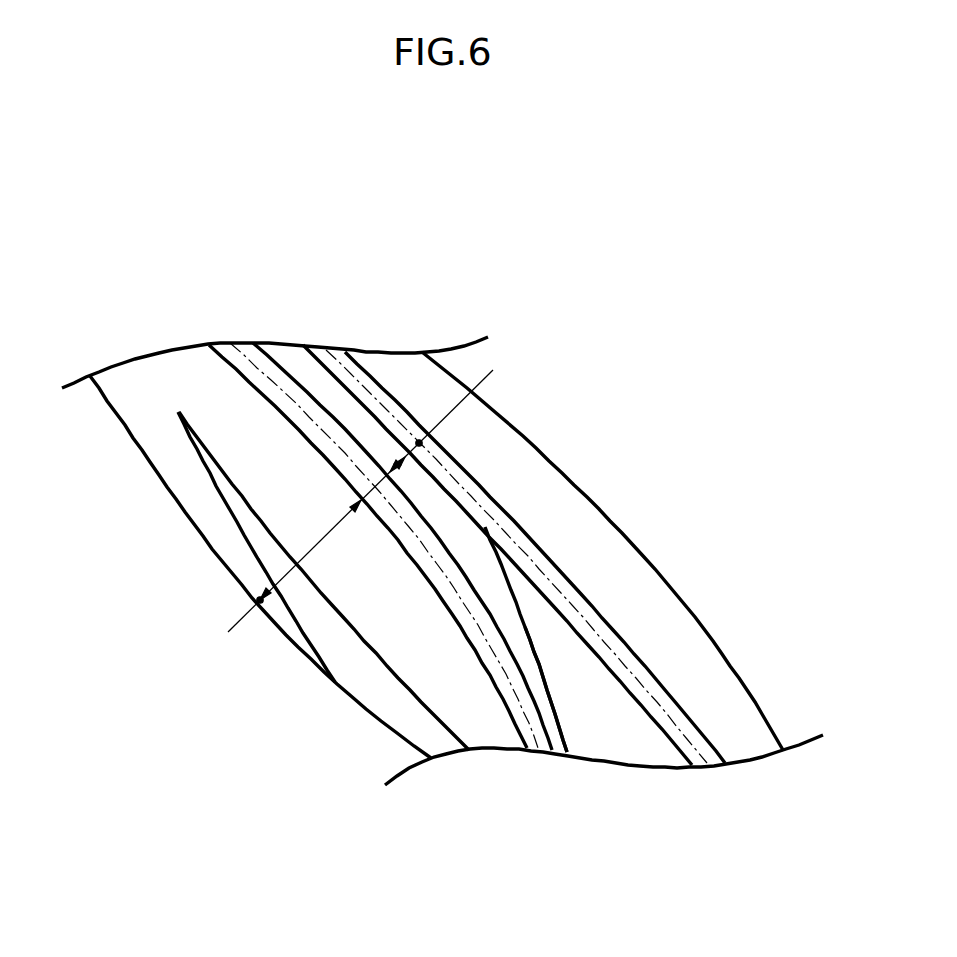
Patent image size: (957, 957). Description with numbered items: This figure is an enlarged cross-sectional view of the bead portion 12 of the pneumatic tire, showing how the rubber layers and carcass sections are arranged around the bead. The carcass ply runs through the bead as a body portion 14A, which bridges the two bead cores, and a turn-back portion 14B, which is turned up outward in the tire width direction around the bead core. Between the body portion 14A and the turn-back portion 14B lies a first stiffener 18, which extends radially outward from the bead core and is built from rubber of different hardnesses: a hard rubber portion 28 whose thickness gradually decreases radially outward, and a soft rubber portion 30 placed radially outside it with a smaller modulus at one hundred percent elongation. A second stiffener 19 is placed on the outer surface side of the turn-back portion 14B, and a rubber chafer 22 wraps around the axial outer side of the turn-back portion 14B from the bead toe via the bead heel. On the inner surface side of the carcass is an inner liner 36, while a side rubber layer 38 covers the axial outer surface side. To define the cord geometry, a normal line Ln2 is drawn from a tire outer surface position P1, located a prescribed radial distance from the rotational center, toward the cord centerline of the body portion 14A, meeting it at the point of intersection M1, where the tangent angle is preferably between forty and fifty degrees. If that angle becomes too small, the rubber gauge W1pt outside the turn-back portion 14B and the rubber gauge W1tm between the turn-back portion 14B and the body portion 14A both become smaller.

The bead portion 12 is at (213, 553).
The body portion 14A is at (388, 388).
The turn-back portion 14B is at (270, 362).
The first stiffener 18 is at (657, 639).
The second stiffener 19 is at (488, 722).
The rubber chafer 22 is at (390, 707).
The hard rubber portion 28 is at (610, 707).
The soft rubber portion 30 is at (482, 578).
The inner liner 36 is at (590, 528).
The side rubber layer 38 is at (138, 424).
The point of intersection M1 is at (427, 443).
The rubber gauge between turn-back portion and body portion W1tm is at (393, 474).
The rubber gauge on tire axial direction outer side of turn-back portion W1pt is at (317, 543).
The normal line Ln2 is at (232, 621).
The tire outer surface position P1 is at (260, 604).